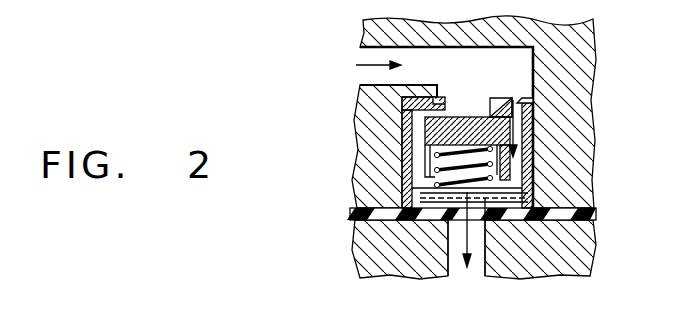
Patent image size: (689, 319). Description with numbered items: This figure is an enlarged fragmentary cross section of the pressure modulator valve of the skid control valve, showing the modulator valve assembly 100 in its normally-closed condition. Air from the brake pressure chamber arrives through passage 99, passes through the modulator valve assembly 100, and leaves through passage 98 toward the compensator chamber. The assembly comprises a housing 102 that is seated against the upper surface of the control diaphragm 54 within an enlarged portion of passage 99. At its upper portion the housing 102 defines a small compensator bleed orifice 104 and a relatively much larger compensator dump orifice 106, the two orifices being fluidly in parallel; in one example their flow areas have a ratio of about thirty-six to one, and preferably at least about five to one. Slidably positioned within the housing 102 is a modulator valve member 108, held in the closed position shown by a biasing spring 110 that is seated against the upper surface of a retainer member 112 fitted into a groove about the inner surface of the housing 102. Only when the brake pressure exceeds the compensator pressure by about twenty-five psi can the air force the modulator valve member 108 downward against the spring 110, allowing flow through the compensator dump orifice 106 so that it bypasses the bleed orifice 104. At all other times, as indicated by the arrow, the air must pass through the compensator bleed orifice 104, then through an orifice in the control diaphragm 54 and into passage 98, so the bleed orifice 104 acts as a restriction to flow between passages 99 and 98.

The control diaphragm 54 is at (595, 212).
The passage 98 is at (455, 277).
The passage 99 is at (366, 78).
The modulator valve assembly 100 is at (598, 172).
The housing 102 is at (533, 128).
The compensator bleed orifice 104 is at (516, 97).
The compensator dump orifice 106 is at (455, 105).
The modulator valve member 108 is at (468, 115).
The biasing spring 110 is at (522, 187).
The retainer member 112 is at (512, 202).